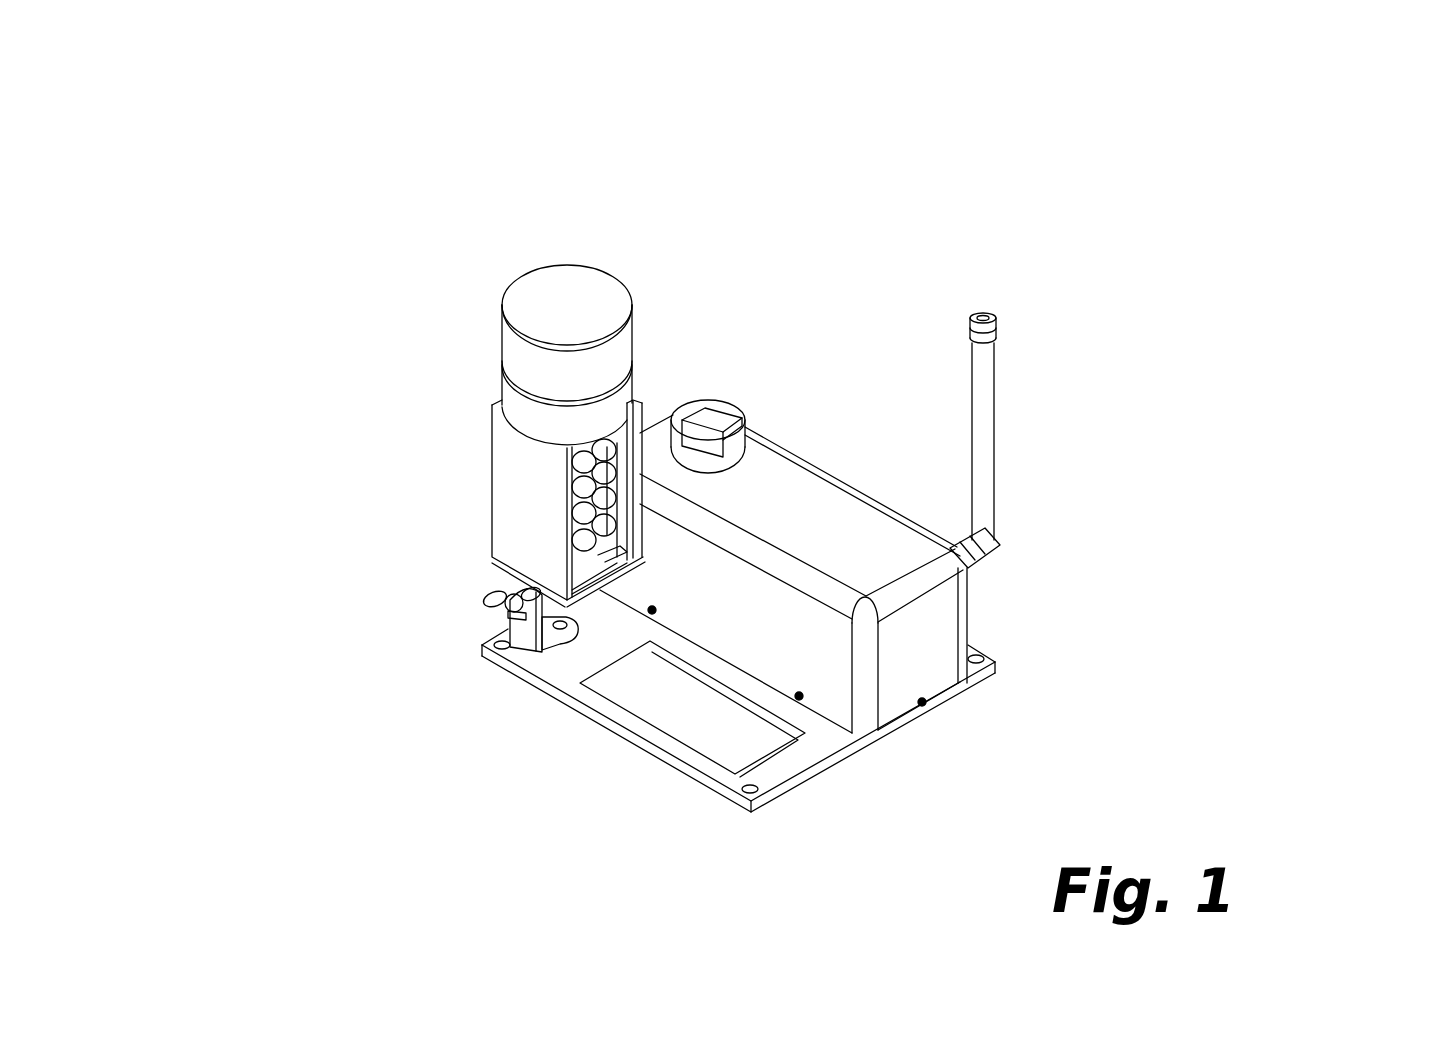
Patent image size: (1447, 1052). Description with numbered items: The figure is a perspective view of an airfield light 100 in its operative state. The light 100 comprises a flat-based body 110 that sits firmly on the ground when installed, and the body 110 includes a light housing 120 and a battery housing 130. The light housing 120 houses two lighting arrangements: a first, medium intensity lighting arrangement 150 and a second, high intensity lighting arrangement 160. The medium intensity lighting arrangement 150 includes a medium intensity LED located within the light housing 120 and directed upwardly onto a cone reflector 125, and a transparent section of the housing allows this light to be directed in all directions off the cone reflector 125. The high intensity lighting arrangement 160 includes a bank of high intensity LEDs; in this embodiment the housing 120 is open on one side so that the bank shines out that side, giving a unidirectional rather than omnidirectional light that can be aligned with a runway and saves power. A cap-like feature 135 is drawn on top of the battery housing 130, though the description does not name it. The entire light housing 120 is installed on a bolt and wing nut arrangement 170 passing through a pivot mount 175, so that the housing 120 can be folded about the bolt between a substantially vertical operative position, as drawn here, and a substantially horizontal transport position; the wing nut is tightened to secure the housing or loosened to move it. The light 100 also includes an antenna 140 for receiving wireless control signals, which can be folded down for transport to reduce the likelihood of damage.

The airfield light 100 is at (1172, 205).
The flat-based body 110 is at (928, 712).
The light housing 120 is at (517, 452).
The cone reflector 125 is at (573, 322).
The battery housing 130 is at (775, 497).
The fill cap 135 is at (713, 408).
The antenna 140 is at (992, 393).
The medium intensity lighting arrangement 150 is at (516, 373).
The high intensity lighting arrangement 160 is at (575, 485).
The bolt and wing nut arrangement 170 is at (486, 612).
The pivot mount 175 is at (522, 645).